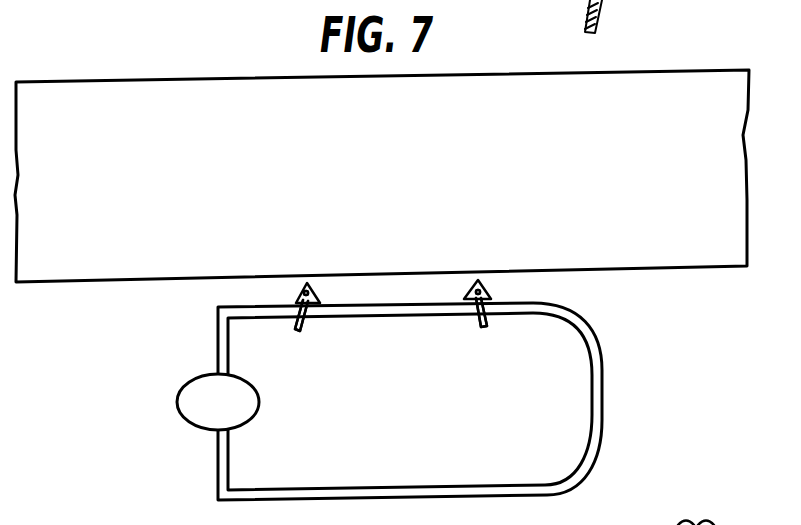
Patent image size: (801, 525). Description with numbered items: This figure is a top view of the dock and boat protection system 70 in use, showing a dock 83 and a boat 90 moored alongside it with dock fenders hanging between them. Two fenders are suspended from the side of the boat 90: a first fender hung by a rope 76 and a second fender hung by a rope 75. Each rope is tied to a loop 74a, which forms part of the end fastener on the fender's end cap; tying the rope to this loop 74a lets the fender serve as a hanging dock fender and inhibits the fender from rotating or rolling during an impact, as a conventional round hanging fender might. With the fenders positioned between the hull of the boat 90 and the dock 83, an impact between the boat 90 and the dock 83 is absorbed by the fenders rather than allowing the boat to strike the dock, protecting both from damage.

The dock 83 is at (605, 82).
The boat 90 is at (600, 370).
The dock and boat protection system 70 is at (295, 285).
The loop 74a is at (310, 297).
The rope 76 is at (303, 332).
The rope 75 is at (490, 318).